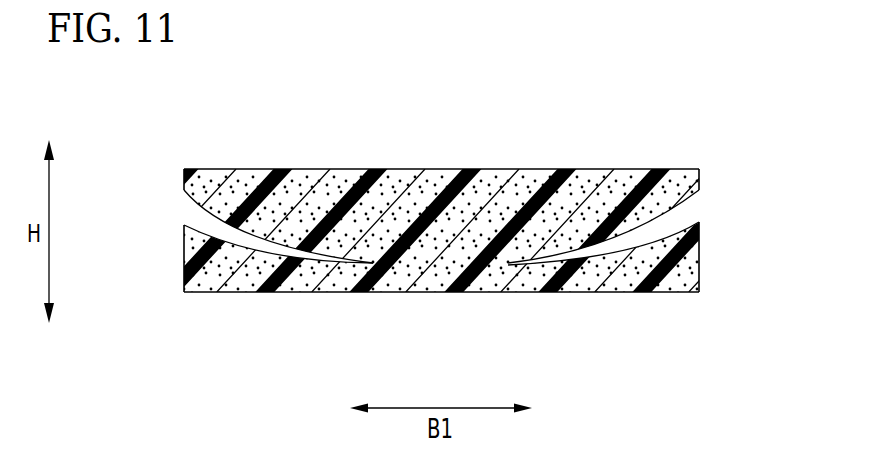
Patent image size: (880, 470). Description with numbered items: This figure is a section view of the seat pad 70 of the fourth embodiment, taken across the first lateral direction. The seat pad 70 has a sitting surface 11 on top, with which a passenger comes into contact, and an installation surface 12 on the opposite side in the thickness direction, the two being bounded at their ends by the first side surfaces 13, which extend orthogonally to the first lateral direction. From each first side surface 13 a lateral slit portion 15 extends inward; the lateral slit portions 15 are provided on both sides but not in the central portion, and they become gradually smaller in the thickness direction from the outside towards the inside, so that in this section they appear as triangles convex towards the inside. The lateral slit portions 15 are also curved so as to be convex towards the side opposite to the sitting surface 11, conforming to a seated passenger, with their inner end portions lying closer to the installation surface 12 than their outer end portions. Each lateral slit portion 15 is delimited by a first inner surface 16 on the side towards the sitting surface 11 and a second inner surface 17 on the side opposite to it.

The seat pad 70 is at (680, 108).
The sitting surface 11 is at (449, 169).
The installation surface 12 is at (440, 292).
The first side surface 13 is at (184, 257).
The lateral slit portion 15 is at (183, 207).
The first inner surface 16 is at (626, 236).
The second inner surface 17 is at (614, 258).